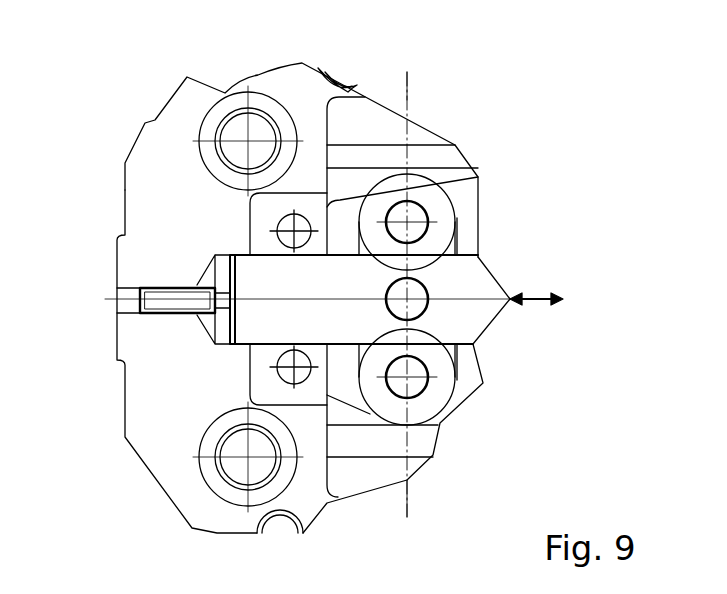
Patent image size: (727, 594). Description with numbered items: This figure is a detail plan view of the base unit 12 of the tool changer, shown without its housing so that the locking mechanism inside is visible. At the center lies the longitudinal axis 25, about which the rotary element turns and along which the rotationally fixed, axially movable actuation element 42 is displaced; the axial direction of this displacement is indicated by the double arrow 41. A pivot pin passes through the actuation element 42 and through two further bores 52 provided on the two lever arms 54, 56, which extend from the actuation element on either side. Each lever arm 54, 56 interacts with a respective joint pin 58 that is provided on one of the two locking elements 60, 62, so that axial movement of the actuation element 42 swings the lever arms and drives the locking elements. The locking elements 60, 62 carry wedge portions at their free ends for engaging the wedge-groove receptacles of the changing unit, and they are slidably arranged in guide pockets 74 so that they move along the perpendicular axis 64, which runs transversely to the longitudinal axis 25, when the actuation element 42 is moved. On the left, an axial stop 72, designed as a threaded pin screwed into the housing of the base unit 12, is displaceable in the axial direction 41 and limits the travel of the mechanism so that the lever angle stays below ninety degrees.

The base unit 12 is at (157, 150).
The longitudinal axis 25 is at (125, 298).
The double arrow 41 is at (530, 303).
The actuation element 42 is at (475, 290).
The bores 52 is at (413, 295).
The lever arm 54 is at (447, 243).
The lever arm 56 is at (442, 362).
The joint pins 58 is at (420, 217).
The locking element 60 is at (465, 187).
The locking element 62 is at (370, 447).
The perpendicular axis 64 is at (410, 100).
The axial stop 72 is at (167, 305).
The guide pockets 74 is at (365, 118).